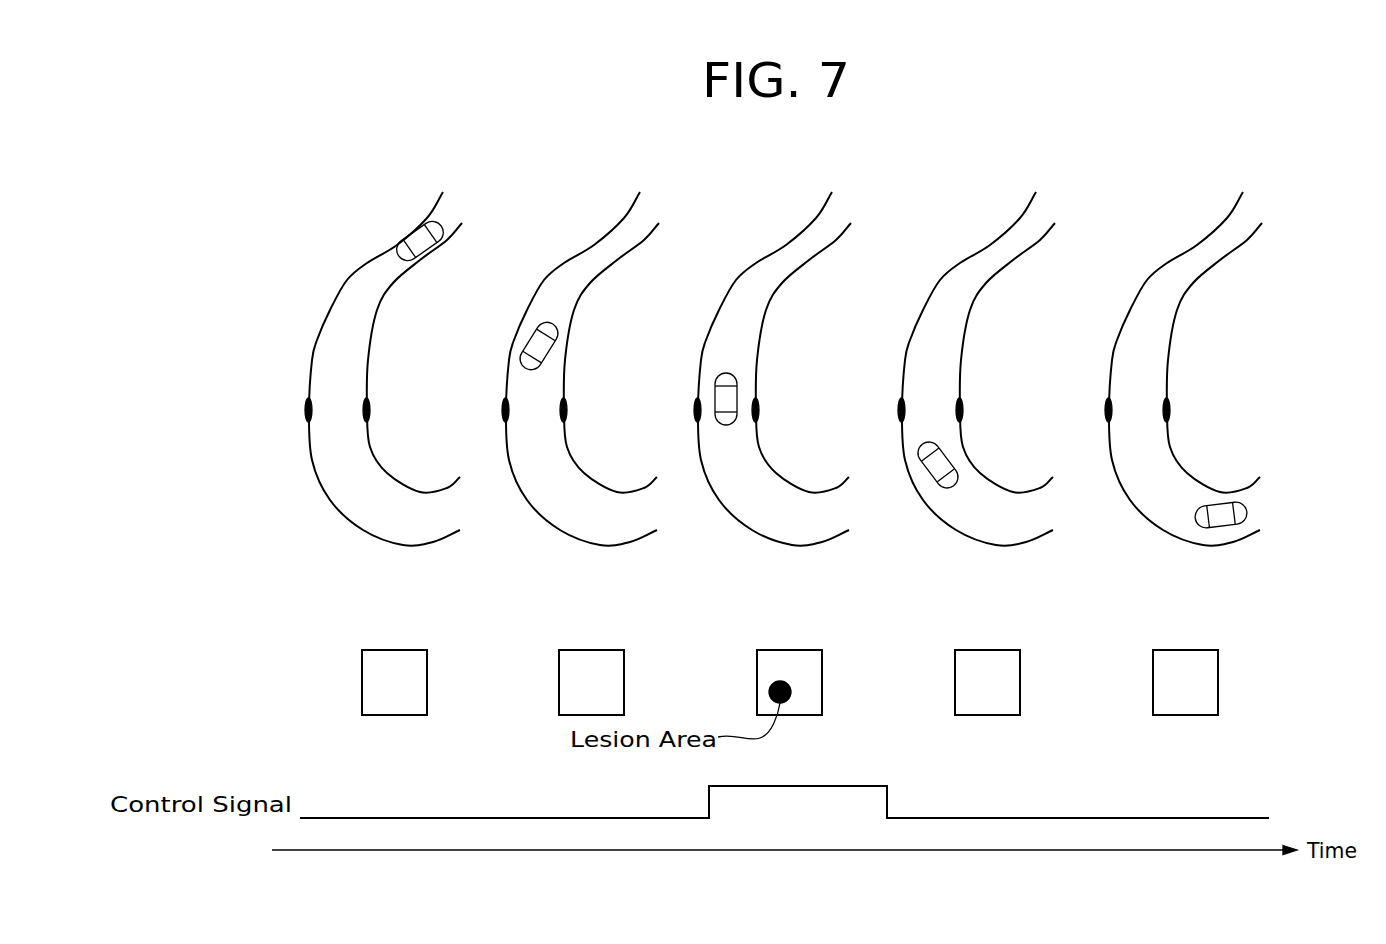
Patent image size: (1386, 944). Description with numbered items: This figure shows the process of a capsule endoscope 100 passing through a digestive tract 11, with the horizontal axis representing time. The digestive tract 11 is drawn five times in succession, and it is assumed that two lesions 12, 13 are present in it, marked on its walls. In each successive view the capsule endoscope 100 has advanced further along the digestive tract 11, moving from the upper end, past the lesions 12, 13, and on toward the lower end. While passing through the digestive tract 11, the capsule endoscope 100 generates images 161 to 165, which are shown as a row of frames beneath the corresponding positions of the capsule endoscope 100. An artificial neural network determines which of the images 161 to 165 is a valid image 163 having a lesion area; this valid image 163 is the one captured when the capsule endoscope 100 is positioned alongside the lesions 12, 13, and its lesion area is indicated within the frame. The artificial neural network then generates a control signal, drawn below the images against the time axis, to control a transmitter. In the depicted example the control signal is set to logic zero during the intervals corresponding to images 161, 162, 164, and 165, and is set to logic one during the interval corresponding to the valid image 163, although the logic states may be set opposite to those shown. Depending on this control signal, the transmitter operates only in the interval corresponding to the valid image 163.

The digestive tract 11 is at (350, 277).
The lesion 12 is at (305, 410).
The lesion 13 is at (370, 410).
The capsule endoscope 100 is at (433, 257).
The image 161 is at (395, 650).
The image 162 is at (592, 650).
The valid image 163 is at (790, 650).
The image 164 is at (988, 650).
The image 165 is at (1186, 650).